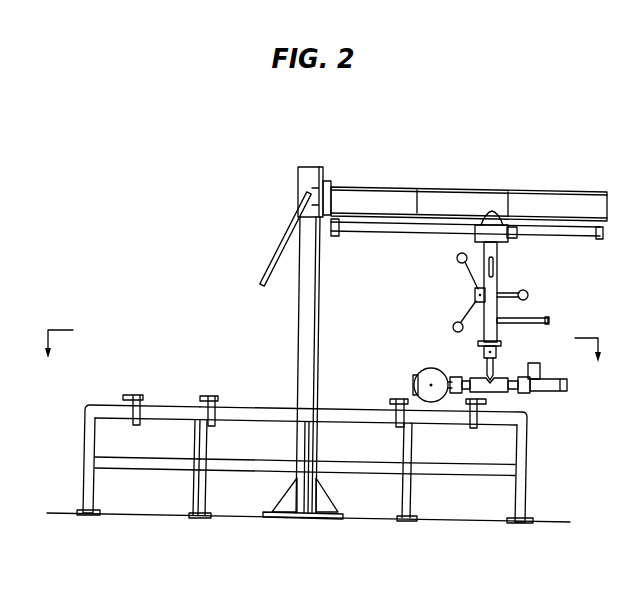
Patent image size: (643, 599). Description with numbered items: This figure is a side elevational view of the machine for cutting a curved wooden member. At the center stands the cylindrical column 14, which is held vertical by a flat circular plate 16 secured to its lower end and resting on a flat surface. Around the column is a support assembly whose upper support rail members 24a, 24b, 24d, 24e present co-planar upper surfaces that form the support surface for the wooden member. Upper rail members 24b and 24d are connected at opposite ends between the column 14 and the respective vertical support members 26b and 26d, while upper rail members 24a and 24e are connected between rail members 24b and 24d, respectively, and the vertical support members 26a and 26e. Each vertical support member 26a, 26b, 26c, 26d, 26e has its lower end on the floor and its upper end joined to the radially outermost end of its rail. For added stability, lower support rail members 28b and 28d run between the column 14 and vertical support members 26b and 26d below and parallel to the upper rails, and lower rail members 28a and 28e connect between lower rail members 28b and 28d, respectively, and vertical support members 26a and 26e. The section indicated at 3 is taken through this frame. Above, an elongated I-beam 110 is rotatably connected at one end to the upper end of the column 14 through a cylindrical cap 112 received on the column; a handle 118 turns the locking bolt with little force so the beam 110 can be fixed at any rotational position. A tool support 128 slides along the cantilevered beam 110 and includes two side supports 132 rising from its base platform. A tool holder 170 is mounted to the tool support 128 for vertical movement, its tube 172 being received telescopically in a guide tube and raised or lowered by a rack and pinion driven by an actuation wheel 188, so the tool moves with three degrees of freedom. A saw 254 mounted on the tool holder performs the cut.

The section line 3- 3 is at (321, 334).
The cylindrical column 14 is at (320, 322).
The flat circular plate 16 is at (340, 504).
The upper support rail member 24a is at (108, 408).
The upper support rail member 24b is at (243, 406).
The upper support rail member 24d is at (372, 406).
The upper support rail member 24e is at (505, 418).
The vertical support member 26a is at (96, 441).
The vertical support member 26b is at (208, 445).
The vertical support member 26c is at (313, 446).
The vertical support member 26d is at (412, 444).
The vertical support member 26e is at (522, 455).
The lower support rail member 28a is at (122, 465).
The lower support rail member 28b is at (232, 468).
The lower support rail member 28d is at (378, 468).
The lower support rail member 28e is at (486, 470).
The elongated beam 110 is at (437, 190).
The cylindrical cap 112 is at (311, 174).
The handle 118 is at (276, 260).
The tool support 128 is at (466, 237).
The side supports 132 is at (500, 228).
The tool holder 170 is at (508, 371).
The tube 172 is at (489, 363).
The actuation wheel 188 is at (470, 295).
The saw 254 is at (417, 368).